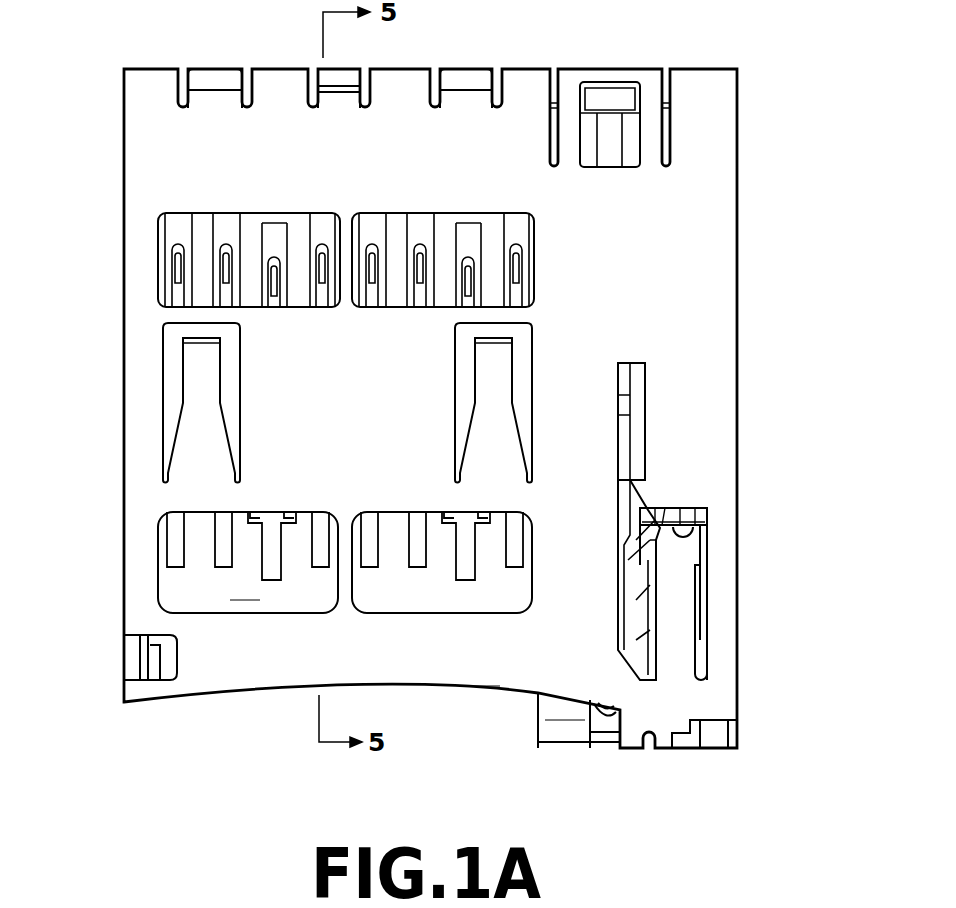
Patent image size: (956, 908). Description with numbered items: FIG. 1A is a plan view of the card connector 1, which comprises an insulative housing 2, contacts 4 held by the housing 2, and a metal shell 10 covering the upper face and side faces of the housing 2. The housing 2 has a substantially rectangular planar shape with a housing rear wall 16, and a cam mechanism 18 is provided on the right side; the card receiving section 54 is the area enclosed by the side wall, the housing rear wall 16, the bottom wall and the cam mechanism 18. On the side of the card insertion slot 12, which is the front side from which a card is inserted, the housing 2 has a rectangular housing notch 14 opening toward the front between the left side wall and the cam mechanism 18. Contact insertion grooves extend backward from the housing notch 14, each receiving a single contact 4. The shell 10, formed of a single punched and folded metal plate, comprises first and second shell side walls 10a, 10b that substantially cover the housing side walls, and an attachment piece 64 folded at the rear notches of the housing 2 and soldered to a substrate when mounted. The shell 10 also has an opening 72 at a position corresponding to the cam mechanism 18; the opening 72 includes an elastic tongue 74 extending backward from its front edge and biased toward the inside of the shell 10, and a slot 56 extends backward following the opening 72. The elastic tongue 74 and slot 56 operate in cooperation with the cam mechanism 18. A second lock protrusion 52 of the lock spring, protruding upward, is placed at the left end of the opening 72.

The card connector 1 is at (763, 228).
The housing 2 is at (573, 724).
The contacts 4 is at (172, 541).
The shell 10 is at (718, 189).
The first shell side wall 10a is at (738, 392).
The second shell side wall 10b is at (121, 407).
The card insertion slot 12 is at (485, 700).
The housing notch 14 is at (538, 718).
The housing rear wall 16 is at (355, 80).
The cam mechanism 18 is at (648, 513).
The second lock protrusion 52 is at (622, 608).
The card receiving section 54 is at (243, 588).
The slot 56 is at (620, 465).
The attachment piece 64 is at (218, 78).
The opening 72 is at (715, 526).
The elastic tongue 74 is at (685, 606).